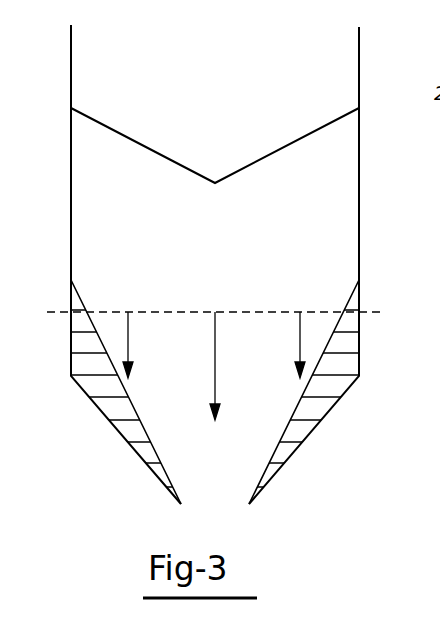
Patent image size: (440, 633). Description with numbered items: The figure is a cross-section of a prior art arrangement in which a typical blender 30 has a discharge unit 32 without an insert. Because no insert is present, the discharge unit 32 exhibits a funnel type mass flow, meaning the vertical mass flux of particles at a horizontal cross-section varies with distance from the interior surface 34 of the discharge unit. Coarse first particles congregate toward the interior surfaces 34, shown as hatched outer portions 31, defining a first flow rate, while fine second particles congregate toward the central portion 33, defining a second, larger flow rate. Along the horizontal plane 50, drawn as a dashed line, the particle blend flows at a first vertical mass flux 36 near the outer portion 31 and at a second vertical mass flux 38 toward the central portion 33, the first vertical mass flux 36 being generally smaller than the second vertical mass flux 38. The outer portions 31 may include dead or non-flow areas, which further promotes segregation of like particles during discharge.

The blender 30 is at (377, 60).
The outer portions 31 is at (118, 406).
The discharge unit 32 is at (312, 469).
The central portion 33 is at (198, 356).
The interior surface 34 is at (71, 181).
The first vertical mass flux 36 is at (128, 338).
The second vertical mass flux 38 is at (217, 363).
The horizontal plane 50 is at (55, 312).